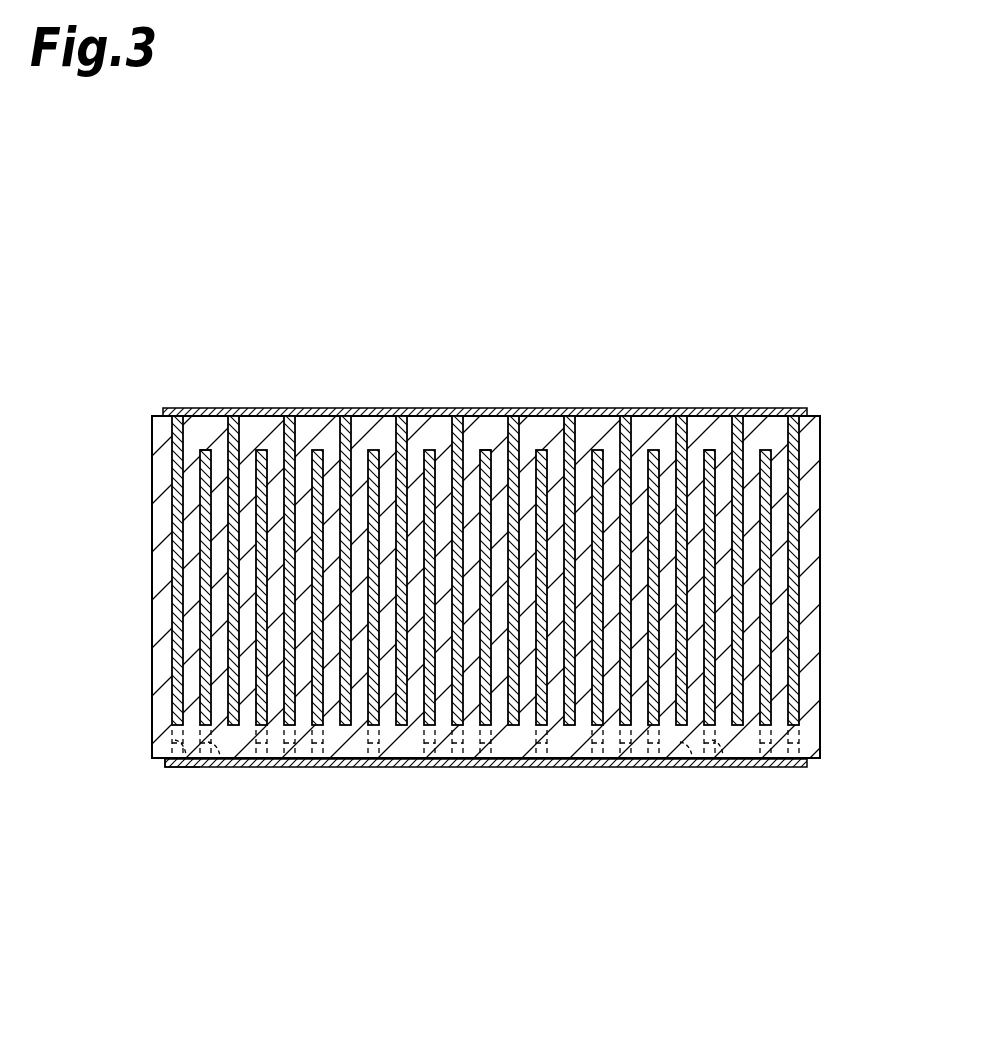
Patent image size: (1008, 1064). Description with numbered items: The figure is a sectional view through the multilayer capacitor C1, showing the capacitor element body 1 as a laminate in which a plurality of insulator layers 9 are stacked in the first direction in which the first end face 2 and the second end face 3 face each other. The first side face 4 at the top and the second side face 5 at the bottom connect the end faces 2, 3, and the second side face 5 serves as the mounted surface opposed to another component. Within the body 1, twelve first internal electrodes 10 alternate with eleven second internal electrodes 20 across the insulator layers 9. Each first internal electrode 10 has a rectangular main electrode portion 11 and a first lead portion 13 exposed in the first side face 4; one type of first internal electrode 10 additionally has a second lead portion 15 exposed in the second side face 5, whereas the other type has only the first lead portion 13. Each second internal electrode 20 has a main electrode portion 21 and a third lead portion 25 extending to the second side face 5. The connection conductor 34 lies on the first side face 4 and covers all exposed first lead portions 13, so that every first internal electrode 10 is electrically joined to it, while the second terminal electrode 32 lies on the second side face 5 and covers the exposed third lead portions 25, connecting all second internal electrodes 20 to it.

The multilayer capacitor C1 is at (791, 313).
The capacitor element body 1 is at (818, 417).
The first end face 2 is at (820, 582).
The second end face 3 is at (152, 580).
The first side face 4 is at (587, 413).
The second side face 5 is at (585, 762).
The insulator layers 9 is at (192, 477).
The first internal electrodes 10 is at (158, 468).
The main electrode portion 11 is at (177, 605).
The first lead portion 13 is at (158, 415).
The second lead portion 15 is at (192, 770).
The second internal electrodes 20 is at (210, 452).
The main electrode portion 21 is at (715, 607).
The third lead portion 25 is at (213, 747).
The second terminal electrode 32 is at (370, 762).
The connection conductor 34 is at (372, 412).